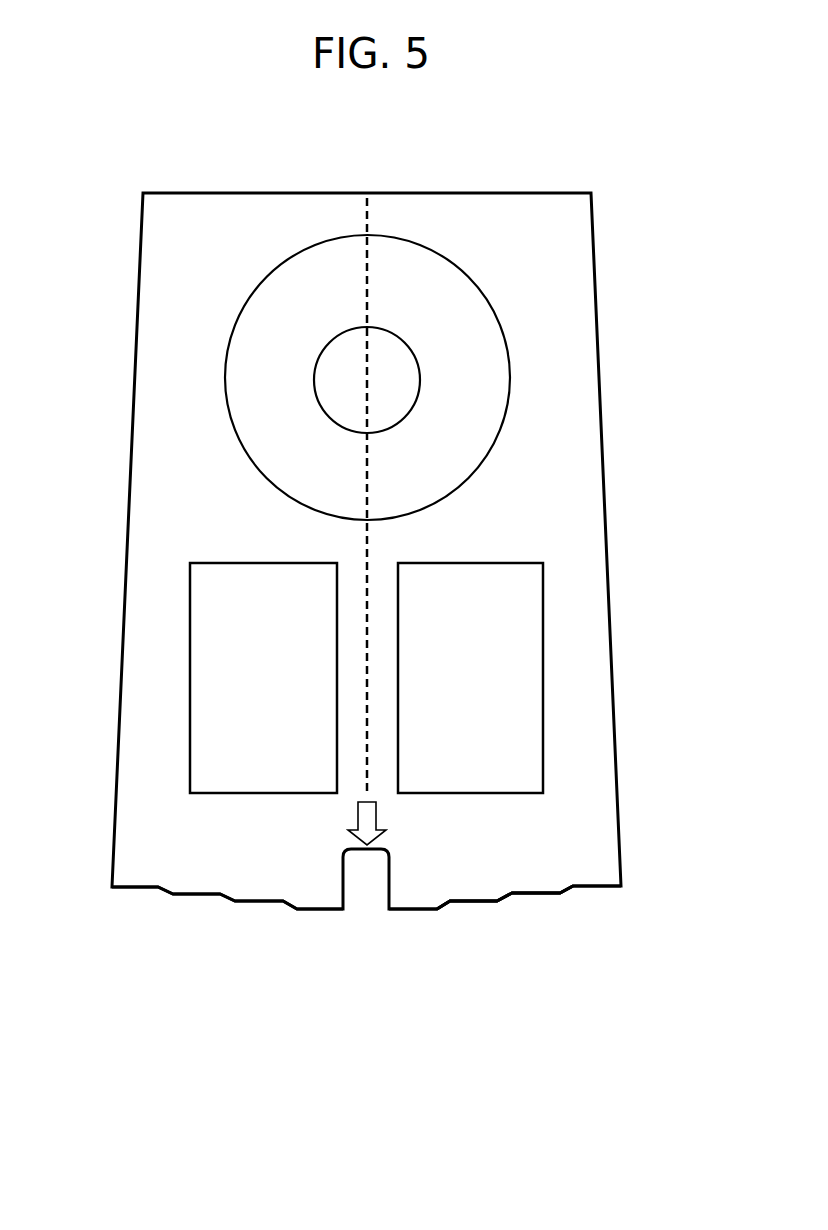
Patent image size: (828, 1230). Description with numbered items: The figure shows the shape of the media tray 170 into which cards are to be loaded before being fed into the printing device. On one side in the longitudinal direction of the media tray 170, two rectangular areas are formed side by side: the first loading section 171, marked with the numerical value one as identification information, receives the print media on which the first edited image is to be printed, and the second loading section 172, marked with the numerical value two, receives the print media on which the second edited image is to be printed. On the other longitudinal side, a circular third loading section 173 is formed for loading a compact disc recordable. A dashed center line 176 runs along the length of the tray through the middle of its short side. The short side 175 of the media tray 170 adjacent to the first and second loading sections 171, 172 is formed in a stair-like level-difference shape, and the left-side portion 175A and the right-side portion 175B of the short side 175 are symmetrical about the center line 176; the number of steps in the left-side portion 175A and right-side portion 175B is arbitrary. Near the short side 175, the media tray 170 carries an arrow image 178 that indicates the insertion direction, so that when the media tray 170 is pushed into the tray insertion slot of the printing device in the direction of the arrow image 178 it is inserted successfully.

The media tray 170 is at (602, 442).
The first loading section 171 is at (190, 710).
The second loading section 172 is at (543, 683).
The third loading section 173 is at (480, 325).
The short side 175 is at (426, 922).
The left-side portion 175A is at (232, 917).
The right-side portion 175B is at (507, 913).
The center line 176 is at (370, 215).
The arrow image 178 is at (359, 847).